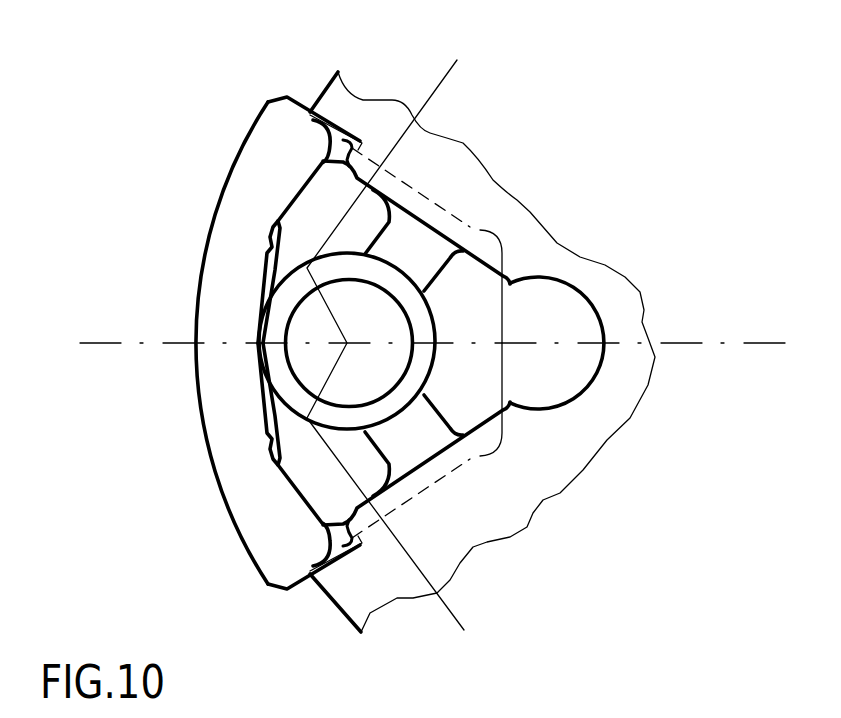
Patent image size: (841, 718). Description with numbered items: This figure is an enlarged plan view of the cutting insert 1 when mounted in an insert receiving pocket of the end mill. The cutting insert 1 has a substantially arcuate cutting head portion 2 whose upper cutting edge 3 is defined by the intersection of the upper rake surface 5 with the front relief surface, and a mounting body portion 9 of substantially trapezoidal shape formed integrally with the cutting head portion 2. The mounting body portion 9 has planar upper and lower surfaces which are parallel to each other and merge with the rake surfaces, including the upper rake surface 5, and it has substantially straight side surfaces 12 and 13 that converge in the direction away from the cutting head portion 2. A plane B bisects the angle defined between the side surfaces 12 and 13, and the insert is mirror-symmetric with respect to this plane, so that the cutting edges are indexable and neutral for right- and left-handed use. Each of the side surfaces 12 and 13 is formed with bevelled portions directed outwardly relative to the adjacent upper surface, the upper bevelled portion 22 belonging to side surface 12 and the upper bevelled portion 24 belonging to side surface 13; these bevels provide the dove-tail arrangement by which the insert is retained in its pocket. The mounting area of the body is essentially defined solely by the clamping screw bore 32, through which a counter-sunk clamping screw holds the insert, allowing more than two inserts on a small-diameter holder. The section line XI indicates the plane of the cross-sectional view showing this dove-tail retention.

The cutting insert 1 is at (186, 159).
The cutting head portion 2 is at (152, 400).
The upper cutting edge 3 is at (221, 497).
The upper rake surface 5 is at (269, 530).
The mounting body portion 9 is at (450, 307).
The side surface 12 is at (443, 491).
The side surface 13 is at (447, 194).
The upper bevelled portion 22 is at (515, 452).
The upper bevelled portion 24 is at (452, 230).
The clamping screw bore 32 is at (310, 322).
The plane of symmetry B is at (690, 340).
The section line XI- XI is at (434, 79).